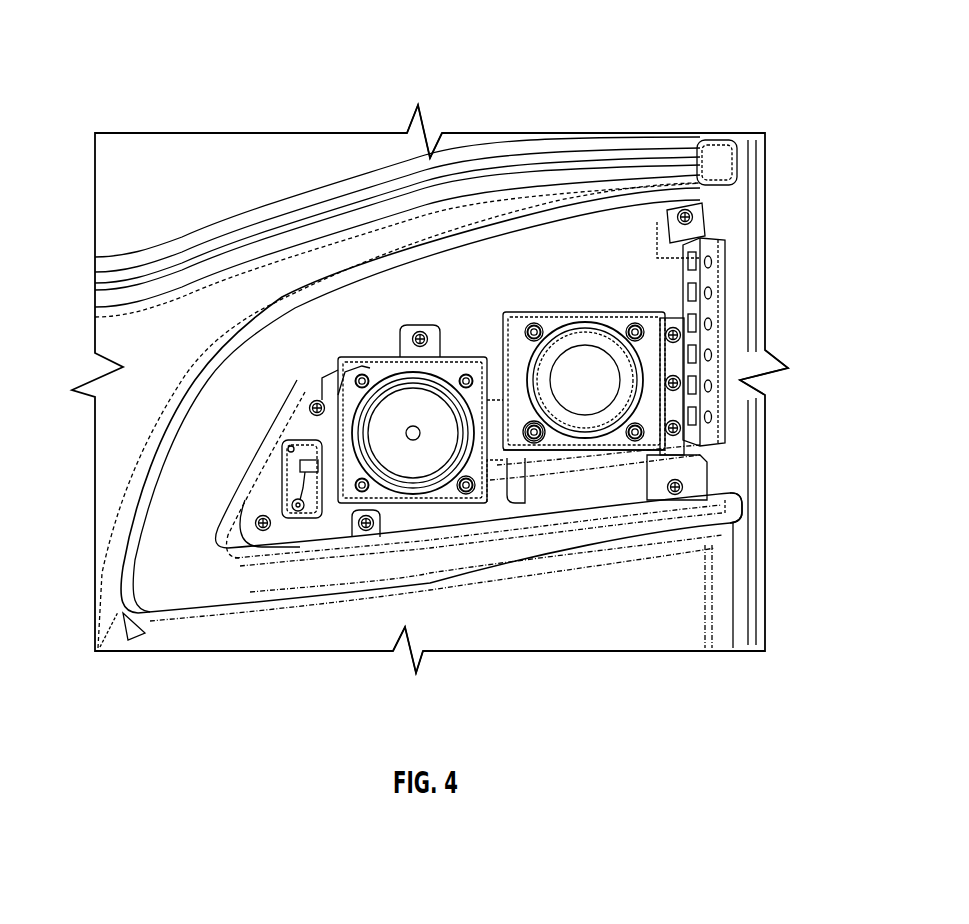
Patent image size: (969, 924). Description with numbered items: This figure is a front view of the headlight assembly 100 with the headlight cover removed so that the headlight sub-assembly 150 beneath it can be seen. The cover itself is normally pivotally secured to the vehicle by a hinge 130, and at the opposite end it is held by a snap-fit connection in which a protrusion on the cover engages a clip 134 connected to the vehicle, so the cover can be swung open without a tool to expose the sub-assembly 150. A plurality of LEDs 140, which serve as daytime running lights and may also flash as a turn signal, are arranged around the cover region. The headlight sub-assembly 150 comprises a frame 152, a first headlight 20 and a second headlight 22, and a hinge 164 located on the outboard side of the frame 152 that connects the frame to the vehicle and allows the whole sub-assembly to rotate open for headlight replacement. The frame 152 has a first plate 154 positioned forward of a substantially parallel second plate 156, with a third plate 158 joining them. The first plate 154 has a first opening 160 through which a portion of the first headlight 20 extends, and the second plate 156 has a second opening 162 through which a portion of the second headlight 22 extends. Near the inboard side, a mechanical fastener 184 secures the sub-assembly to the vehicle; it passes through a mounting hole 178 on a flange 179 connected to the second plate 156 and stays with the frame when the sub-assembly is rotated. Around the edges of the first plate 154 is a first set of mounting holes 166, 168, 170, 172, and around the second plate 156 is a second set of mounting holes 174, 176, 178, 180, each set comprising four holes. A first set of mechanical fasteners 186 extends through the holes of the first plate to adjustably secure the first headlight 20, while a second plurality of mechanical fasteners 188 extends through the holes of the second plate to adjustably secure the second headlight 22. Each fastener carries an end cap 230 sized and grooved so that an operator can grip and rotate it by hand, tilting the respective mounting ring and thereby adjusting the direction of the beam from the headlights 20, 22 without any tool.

The headlight assembly 100 is at (148, 82).
The first headlight 20 is at (640, 327).
The second headlight 22 is at (417, 458).
The hinge 130 is at (655, 322).
The clip 134 is at (293, 516).
The LEDs 140 is at (287, 340).
The headlight sub-assembly 150 is at (662, 322).
The frame 152 is at (788, 368).
The first plate 154 is at (652, 432).
The second plate 156 is at (407, 630).
The third plate 158 is at (536, 440).
The first opening 160 is at (633, 326).
The second opening 162 is at (400, 377).
The hinge 164 is at (677, 354).
The mounting hole 166 is at (690, 437).
The mounting hole 168 is at (540, 440).
The mounting hole 170 is at (581, 360).
The mounting hole 172 is at (643, 330).
The mounting hole 174 is at (470, 491).
The mounting hole 176 is at (357, 489).
The mounting hole 178 is at (357, 384).
The flange 179 is at (392, 493).
The mounting hole 180 is at (462, 376).
The mechanical fastener 184 is at (420, 332).
The first set of mechanical fasteners 186 is at (538, 325).
The second plurality of mechanical fasteners 188 is at (466, 375).
The end cap 230 is at (472, 377).